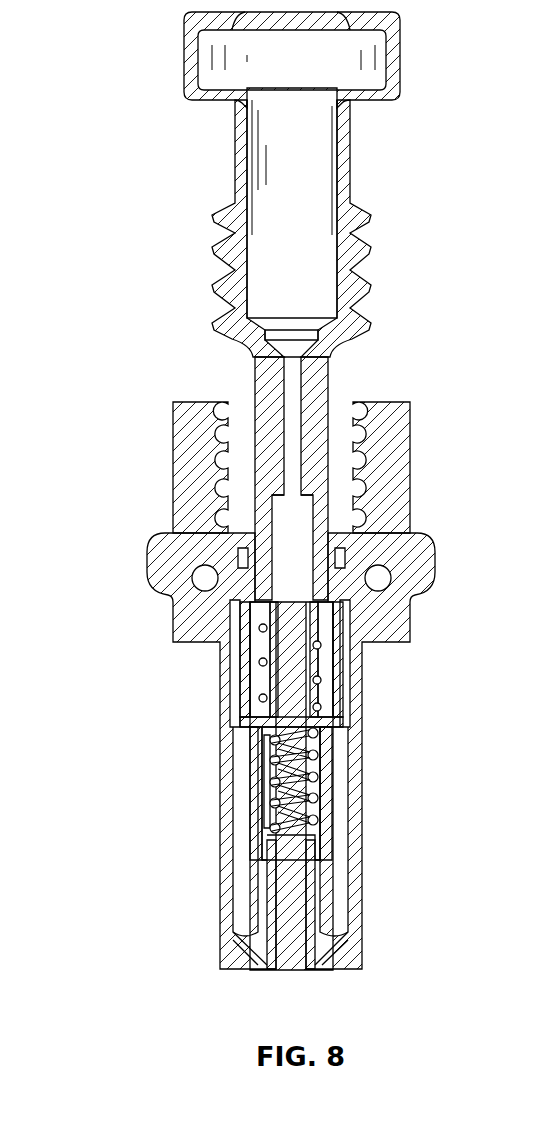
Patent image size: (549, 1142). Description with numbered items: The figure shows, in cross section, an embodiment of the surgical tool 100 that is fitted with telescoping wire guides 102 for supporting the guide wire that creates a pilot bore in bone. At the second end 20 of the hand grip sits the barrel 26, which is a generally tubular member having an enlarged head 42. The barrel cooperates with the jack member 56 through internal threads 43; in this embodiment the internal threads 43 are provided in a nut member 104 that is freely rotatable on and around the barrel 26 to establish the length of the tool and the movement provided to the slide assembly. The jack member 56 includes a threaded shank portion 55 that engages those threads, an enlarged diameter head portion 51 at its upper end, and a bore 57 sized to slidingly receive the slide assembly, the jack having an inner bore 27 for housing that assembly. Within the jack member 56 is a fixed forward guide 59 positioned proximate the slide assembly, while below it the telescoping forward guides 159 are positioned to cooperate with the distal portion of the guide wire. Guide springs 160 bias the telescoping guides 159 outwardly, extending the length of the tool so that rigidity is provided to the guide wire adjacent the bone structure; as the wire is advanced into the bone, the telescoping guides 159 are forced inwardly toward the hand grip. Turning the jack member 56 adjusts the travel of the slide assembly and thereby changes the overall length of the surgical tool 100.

The surgical tool 100 is at (70, 153).
The enlarged diameter head portion 51 is at (182, 71).
The bore 57 is at (325, 165).
The threaded shank portion 55 is at (220, 218).
The jack member 56 is at (360, 216).
The fixed forward guide 59 is at (310, 392).
The internal threads 43 is at (215, 456).
The barrel 26 is at (400, 466).
The nut member 104 is at (398, 427).
The second end 20 is at (432, 543).
The enlarged head 42 is at (155, 565).
The inner bore 27 is at (345, 624).
The guide springs 160 is at (265, 660).
The telescoping forward guides 159 is at (305, 722).
The telescoping wire guides 102 is at (320, 782).